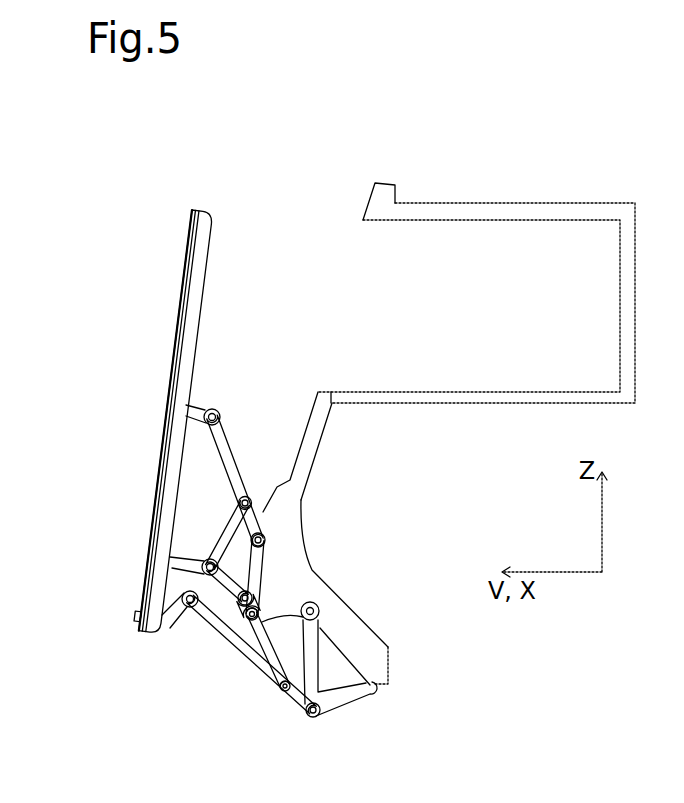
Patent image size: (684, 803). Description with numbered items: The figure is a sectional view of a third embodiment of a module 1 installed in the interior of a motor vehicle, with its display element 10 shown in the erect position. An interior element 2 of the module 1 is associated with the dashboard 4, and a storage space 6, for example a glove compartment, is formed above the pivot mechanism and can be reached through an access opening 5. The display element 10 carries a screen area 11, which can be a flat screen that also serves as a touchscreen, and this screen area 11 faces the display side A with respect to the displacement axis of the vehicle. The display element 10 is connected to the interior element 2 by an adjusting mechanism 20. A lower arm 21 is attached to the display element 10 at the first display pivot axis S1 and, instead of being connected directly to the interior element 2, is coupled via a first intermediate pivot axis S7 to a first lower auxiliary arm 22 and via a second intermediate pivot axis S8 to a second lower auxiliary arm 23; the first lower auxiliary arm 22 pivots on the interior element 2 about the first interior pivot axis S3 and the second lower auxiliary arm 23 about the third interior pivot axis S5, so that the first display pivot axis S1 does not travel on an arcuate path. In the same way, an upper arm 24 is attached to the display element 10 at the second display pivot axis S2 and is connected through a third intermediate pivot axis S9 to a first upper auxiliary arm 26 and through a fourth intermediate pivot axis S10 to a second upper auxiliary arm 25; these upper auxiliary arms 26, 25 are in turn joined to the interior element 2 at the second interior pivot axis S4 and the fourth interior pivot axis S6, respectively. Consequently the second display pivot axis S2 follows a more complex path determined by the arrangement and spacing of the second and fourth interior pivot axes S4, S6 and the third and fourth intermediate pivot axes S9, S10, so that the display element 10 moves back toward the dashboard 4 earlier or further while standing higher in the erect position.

The module 1 is at (135, 379).
The interior element 2 is at (347, 604).
The dashboard 4 is at (284, 413).
The access opening 5 is at (417, 347).
The storage space 6 is at (473, 322).
The display element 10 is at (135, 620).
The screen area 11 is at (153, 487).
The adjusting mechanism 20 is at (244, 577).
The lower arm 21 is at (238, 645).
The first lower auxiliary arm 22 is at (260, 645).
The second lower auxiliary arm 23 is at (345, 703).
The upper arm 24 is at (240, 467).
The second upper auxiliary arm 25 is at (270, 557).
The first upper auxiliary arm 26 is at (224, 540).
The first display pivot axis S1 is at (178, 620).
The second display pivot axis S2 is at (204, 411).
The first interior pivot axis S3 is at (240, 606).
The second interior pivot axis S4 is at (198, 563).
The third interior pivot axis S5 is at (320, 619).
The fourth interior pivot axis S6 is at (262, 608).
The first intermediate pivot axis S7 is at (283, 693).
The second intermediate pivot axis S8 is at (309, 720).
The third intermediate pivot axis S9 is at (252, 503).
The fourth intermediate pivot axis S10 is at (265, 540).
The display side A is at (53, 433).